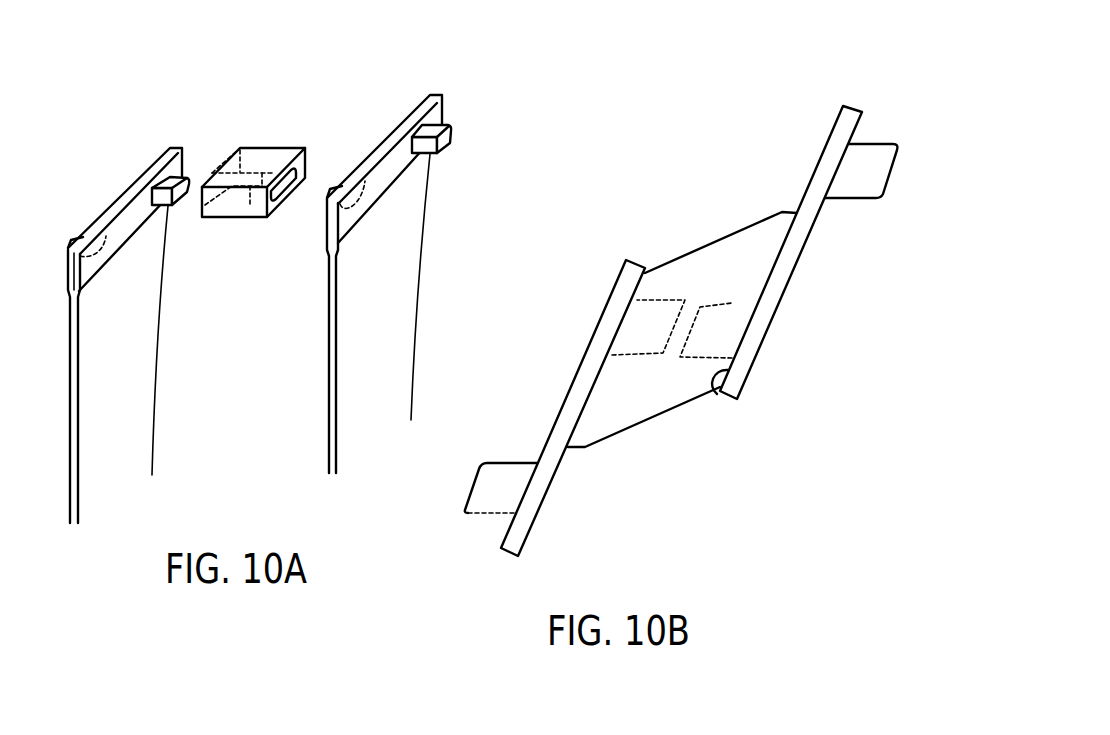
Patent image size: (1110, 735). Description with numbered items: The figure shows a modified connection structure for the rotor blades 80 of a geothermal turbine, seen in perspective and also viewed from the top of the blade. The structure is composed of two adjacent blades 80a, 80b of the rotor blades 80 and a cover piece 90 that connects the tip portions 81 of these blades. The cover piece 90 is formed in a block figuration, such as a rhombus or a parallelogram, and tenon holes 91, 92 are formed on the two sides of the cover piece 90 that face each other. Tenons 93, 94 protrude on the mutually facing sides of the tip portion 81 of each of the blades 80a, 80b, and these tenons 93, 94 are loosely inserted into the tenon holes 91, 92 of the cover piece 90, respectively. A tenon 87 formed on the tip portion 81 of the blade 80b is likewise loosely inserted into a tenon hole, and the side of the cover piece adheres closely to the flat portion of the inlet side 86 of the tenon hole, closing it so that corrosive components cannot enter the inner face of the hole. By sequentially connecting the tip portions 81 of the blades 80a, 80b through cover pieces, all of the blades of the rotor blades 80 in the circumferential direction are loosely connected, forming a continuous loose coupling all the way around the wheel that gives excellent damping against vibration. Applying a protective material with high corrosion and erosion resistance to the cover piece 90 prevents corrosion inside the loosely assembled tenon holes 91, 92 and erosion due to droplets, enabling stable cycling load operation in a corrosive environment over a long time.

In FIG. 10A, the rotor blades 80 is at (203, 361).
In FIG. 10B, the rotor blades 80 is at (681, 347).
In FIG. 10A, the blade 80a is at (326, 428).
In FIG. 10B, the blade 80a is at (730, 400).
In FIG. 10A, the blade 80b is at (140, 430).
In FIG. 10B, the blade 80b is at (573, 408).
In FIG. 10A, the tip portion 81 is at (175, 148).
In FIG. 10A, the inlet side of the tenon hole 86 is at (323, 230).
In FIG. 10B, the inlet side of the tenon hole 86 is at (698, 408).
In FIG. 10A, the tenon 87 is at (122, 227).
In FIG. 10B, the tenon 87 is at (553, 482).
In FIG. 10A, the cover piece 90 is at (263, 152).
In FIG. 10B, the cover piece 90 is at (706, 268).
In FIG. 10A, the tenon hole 91 is at (295, 177).
In FIG. 10A, the tenon hole 92 is at (212, 173).
In FIG. 10A, the tenon 93 is at (70, 241).
In FIG. 10B, the tenon 93 is at (497, 462).
In FIG. 10A, the tenon 94 is at (169, 176).
In FIG. 10B, the tenon 94 is at (888, 143).